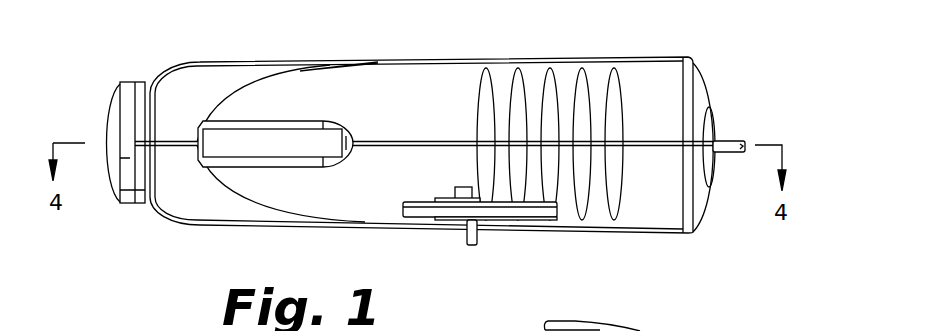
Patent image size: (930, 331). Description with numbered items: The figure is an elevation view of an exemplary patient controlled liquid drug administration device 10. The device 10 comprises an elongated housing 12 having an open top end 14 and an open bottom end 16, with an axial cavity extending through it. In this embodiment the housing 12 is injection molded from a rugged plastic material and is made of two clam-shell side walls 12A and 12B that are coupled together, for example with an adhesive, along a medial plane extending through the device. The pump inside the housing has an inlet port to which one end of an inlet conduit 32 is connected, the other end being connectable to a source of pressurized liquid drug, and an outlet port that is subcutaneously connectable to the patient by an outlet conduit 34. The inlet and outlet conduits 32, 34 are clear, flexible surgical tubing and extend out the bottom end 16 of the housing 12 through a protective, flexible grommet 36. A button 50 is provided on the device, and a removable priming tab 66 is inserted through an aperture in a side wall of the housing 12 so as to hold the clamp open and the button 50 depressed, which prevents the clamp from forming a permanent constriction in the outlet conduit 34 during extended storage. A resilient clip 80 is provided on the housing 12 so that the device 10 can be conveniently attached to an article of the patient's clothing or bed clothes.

The patient controlled liquid drug administration device 10 is at (572, 45).
The housing 12 is at (683, 58).
The clam-shell side wall 12A is at (402, 83).
The clam-shell side wall 12B is at (365, 207).
The top end 14 is at (163, 72).
The bottom end 16 is at (700, 200).
The outlet conduit 34 is at (727, 140).
The grommet 36 is at (713, 170).
The button 50 is at (130, 193).
The priming tab 66 is at (530, 210).
The resilient clip 80 is at (255, 150).
The inlet conduit 32 is at (722, 330).